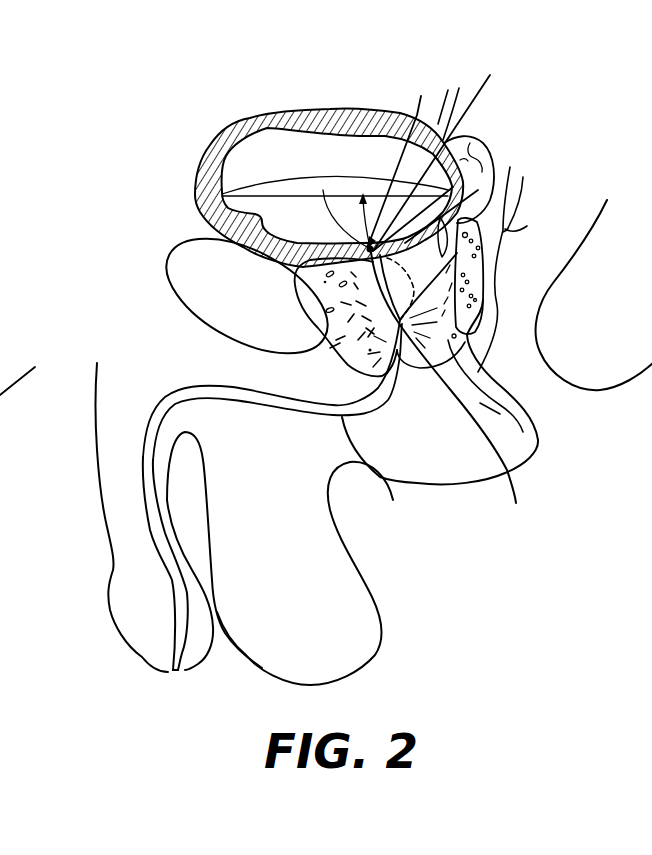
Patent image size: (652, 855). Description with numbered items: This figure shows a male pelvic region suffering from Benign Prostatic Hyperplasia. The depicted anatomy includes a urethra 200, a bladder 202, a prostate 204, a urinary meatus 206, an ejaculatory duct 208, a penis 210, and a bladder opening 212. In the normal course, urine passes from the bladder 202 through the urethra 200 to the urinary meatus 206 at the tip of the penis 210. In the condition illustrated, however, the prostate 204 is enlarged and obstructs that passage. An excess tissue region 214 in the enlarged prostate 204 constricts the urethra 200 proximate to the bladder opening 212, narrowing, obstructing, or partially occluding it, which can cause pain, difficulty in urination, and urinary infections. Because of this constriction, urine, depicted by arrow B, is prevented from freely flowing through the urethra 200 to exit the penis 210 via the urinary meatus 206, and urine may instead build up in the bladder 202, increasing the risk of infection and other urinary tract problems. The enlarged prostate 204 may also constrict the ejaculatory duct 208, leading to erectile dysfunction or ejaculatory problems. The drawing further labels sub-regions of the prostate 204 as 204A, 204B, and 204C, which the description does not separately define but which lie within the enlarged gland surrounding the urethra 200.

The urethra 200 is at (377, 492).
The bladder 202 is at (276, 165).
The prostate 204 is at (420, 390).
The left lobe of prostate 204A is at (357, 366).
The right lobe of prostate 204B is at (462, 330).
The central zone of prostate 204C is at (446, 151).
The urinary meatus 206 is at (173, 672).
The ejaculatory duct 208 is at (442, 252).
The penis 210 is at (107, 527).
The bladder opening 212 is at (399, 159).
The excess tissue region 214 is at (450, 392).
The arrow depicting urine B is at (324, 208).